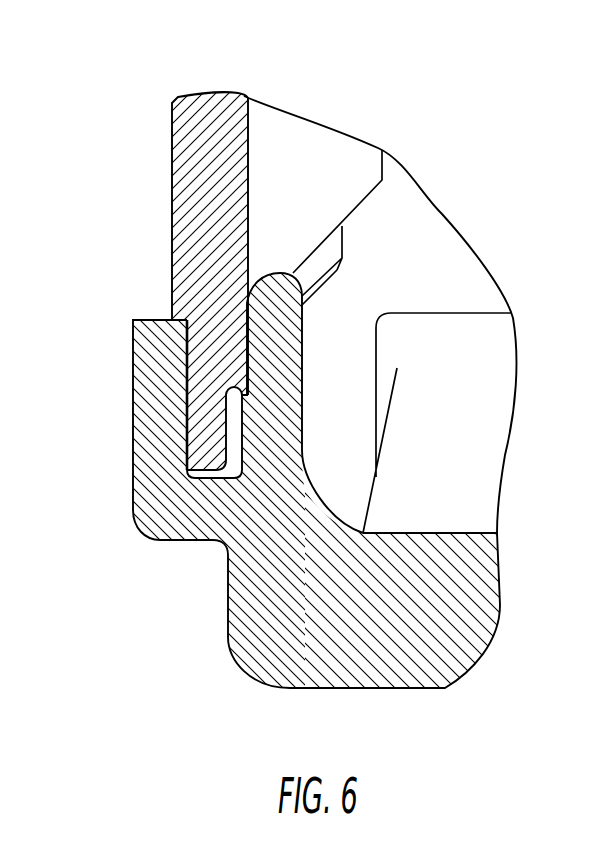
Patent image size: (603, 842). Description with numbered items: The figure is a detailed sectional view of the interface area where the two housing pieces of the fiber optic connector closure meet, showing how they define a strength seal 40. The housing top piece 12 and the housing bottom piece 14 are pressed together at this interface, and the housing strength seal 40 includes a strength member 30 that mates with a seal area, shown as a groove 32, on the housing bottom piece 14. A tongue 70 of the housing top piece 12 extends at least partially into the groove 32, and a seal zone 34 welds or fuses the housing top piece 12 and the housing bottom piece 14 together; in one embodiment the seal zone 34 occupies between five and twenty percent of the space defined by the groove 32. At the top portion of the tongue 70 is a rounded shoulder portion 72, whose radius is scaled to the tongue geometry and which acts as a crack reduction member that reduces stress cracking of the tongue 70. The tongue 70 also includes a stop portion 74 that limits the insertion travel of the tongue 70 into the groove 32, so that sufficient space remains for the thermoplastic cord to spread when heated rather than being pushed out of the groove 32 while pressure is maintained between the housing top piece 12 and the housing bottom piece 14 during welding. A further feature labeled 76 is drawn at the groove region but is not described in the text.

The housing top piece 12 is at (172, 150).
The housing bottom piece 14 is at (498, 615).
The strength member 30 is at (237, 460).
The groove 32 is at (209, 474).
The seal zone 34 is at (232, 420).
The strength seal 40 is at (188, 567).
The tongue 70 is at (207, 427).
The rounded shoulder portion 72 is at (230, 387).
The stop portion 74 is at (172, 323).
The groove 76 is at (203, 478).